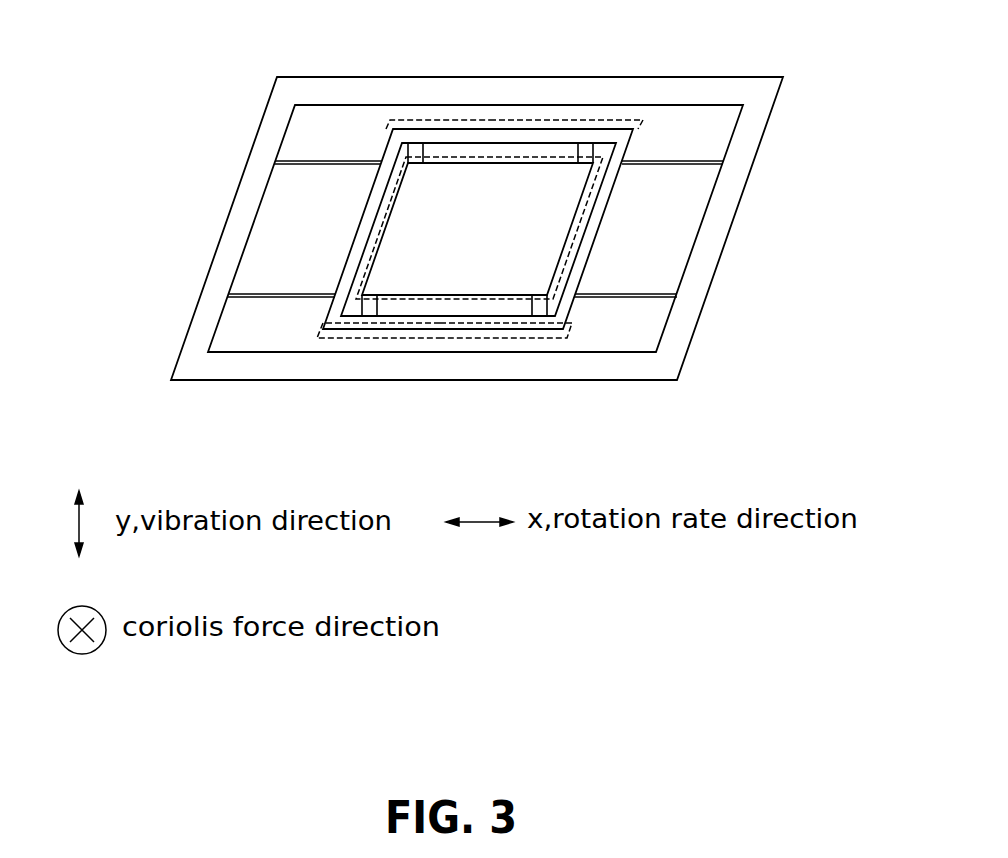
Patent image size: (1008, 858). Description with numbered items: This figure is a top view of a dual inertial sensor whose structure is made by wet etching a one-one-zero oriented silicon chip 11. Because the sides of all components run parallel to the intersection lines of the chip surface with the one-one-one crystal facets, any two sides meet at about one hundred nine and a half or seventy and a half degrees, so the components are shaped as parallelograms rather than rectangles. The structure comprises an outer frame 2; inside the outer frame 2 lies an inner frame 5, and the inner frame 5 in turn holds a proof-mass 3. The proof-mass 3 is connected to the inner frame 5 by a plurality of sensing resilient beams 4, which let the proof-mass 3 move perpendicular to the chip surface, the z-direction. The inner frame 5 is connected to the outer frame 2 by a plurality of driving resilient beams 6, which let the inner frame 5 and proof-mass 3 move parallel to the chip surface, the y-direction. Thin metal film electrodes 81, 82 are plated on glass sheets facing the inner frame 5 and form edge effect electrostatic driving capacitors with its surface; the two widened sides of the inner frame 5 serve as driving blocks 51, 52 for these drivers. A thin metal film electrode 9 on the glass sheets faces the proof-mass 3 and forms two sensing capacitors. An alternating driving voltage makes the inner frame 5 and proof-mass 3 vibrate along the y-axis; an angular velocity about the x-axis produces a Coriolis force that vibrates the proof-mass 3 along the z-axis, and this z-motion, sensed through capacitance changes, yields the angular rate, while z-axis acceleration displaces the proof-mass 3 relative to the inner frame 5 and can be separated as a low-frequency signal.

The outer frame 2 is at (727, 210).
The proof-mass 3 is at (479, 235).
The sensing resilient beams 4 is at (415, 164).
The inner frame 5 is at (361, 241).
The driving resilient beams 6 is at (336, 164).
The thin metal film electrode 9 is at (585, 228).
The (110) silicon chip 11 is at (768, 121).
The driving block 51 is at (486, 132).
The driving block 52 is at (438, 328).
The thin metal film electrode 81 is at (390, 122).
The thin metal film electrode 82 is at (318, 337).